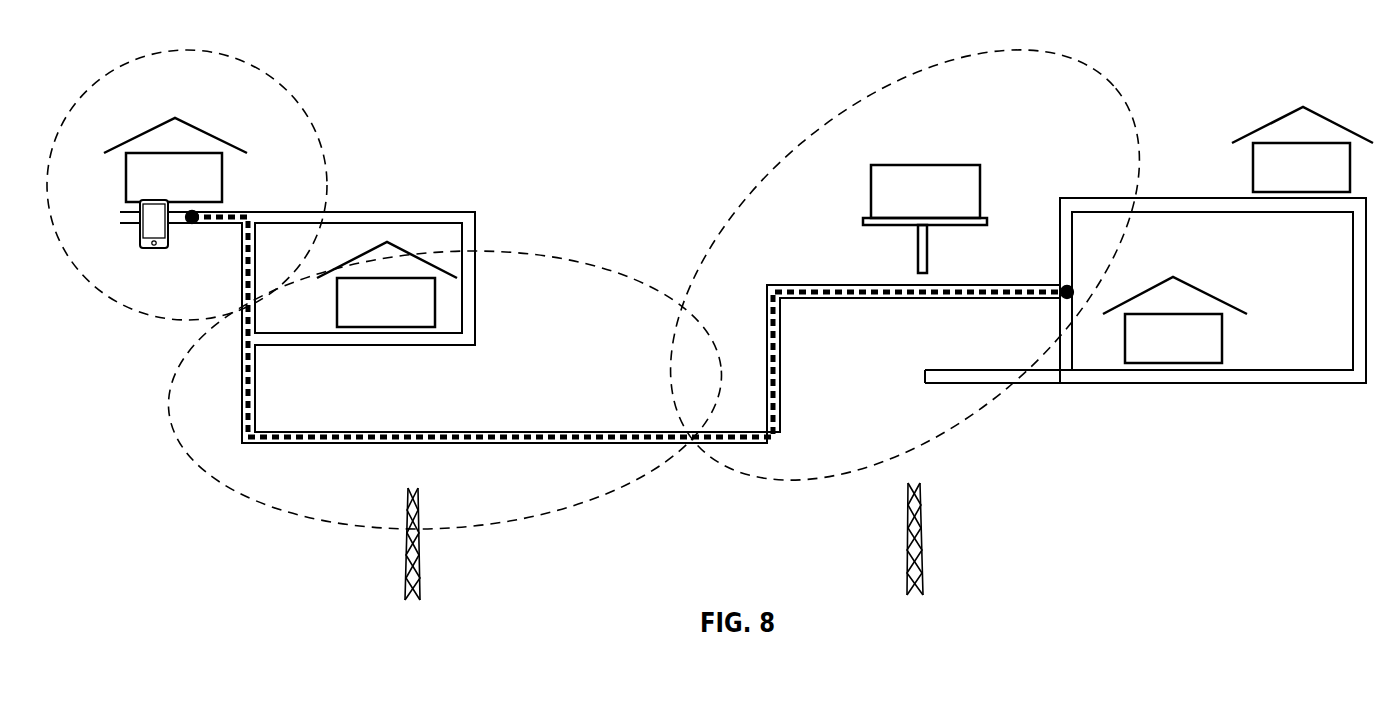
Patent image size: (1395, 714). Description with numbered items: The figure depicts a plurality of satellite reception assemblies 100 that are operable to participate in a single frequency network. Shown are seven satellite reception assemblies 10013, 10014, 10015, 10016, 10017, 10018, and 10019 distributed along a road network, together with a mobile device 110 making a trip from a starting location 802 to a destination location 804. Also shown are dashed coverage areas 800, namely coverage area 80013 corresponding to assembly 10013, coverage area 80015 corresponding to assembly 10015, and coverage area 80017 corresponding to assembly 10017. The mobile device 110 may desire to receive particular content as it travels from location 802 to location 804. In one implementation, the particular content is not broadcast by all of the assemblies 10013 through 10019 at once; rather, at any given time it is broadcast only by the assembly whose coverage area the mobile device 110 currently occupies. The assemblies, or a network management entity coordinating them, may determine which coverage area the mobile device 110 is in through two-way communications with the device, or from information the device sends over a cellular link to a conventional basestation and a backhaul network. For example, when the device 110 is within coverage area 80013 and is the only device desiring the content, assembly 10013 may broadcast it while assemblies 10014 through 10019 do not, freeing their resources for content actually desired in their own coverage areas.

The coverage area 800 is at (633, 282).
The coverage area 80013 is at (282, 81).
The coverage area 80015 is at (568, 256).
The coverage area 80017 is at (959, 54).
The satellite reception assembly 100 is at (738, 351).
The satellite reception assembly 10013 is at (259, 139).
The satellite reception assembly 10014 is at (447, 282).
The satellite reception assembly 10015 is at (449, 484).
The satellite reception assembly 10016 is at (941, 480).
The satellite reception assembly 10017 is at (1002, 216).
The satellite reception assembly 10018 is at (1251, 299).
The satellite reception assembly 10019 is at (1369, 131).
The mobile device 110 is at (140, 228).
The location 802 is at (194, 224).
The location 804 is at (1061, 286).